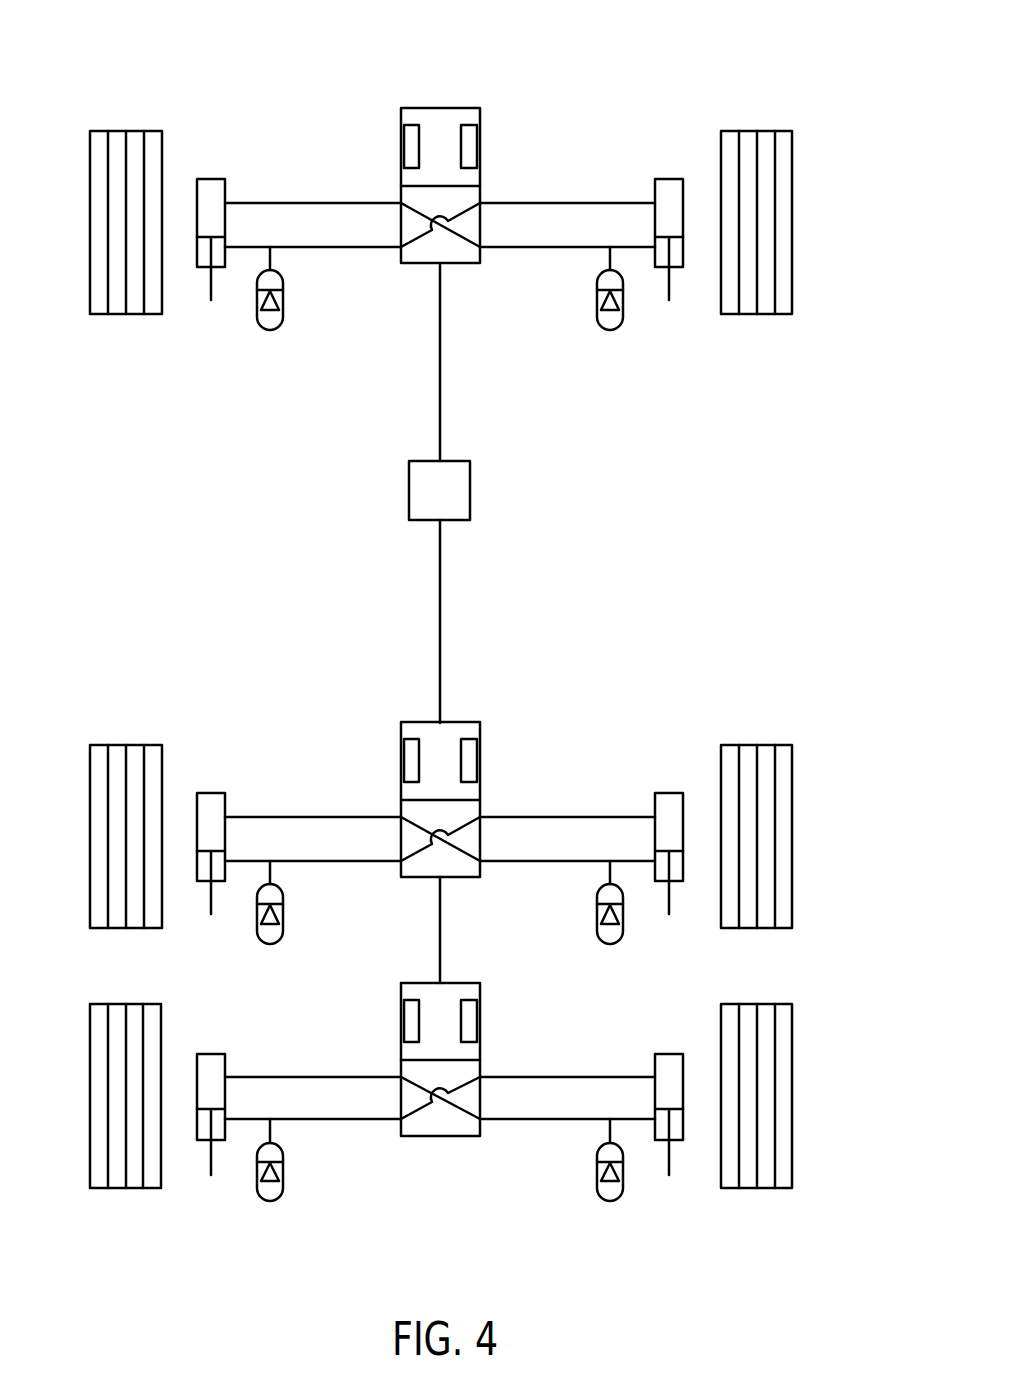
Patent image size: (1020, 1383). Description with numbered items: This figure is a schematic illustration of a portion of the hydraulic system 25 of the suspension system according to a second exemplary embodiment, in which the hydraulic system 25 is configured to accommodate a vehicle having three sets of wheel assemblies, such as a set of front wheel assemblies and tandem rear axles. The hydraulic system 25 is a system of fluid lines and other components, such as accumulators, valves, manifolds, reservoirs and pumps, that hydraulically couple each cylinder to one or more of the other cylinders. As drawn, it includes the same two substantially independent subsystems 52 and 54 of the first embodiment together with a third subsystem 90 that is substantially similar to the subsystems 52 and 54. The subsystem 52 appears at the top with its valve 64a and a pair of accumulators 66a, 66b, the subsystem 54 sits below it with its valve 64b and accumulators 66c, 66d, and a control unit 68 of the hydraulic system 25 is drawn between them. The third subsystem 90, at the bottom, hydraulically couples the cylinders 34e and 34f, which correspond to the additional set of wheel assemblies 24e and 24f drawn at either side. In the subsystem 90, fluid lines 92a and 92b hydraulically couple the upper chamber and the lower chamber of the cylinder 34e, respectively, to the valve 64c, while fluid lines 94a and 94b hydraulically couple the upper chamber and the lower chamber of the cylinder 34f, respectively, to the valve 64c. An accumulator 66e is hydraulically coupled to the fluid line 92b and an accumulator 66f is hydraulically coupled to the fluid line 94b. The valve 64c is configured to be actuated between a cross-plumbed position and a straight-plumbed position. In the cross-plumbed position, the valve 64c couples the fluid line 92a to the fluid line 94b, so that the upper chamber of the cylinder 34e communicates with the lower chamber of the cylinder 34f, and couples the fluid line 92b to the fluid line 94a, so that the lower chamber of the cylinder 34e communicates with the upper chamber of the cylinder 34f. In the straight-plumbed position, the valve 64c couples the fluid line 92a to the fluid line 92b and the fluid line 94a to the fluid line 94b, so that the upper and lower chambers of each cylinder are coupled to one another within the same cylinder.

The hydraulic system 25 is at (347, 70).
The subsystem 52 is at (324, 306).
The subsystem 54 is at (333, 774).
The third subsystem 90 is at (420, 1198).
The valve block 64a is at (463, 104).
The valve block 64b is at (466, 767).
The valve 64c is at (463, 978).
The accumulator 66a is at (262, 327).
The accumulator 66b is at (619, 327).
The accumulator 66c is at (298, 918).
The accumulator 66d is at (640, 919).
The accumulator 66e is at (279, 1198).
The accumulator 66f is at (619, 1198).
The control unit 68 is at (409, 490).
The wheel assembly 24e is at (113, 1003).
The wheel assembly 24f is at (765, 1003).
The cylinder 34e is at (211, 1050).
The cylinder 34f is at (670, 1050).
The fluid line 92a is at (312, 1076).
The fluid line 92b is at (312, 1118).
The fluid line 94a is at (568, 1076).
The fluid line 94b is at (568, 1118).